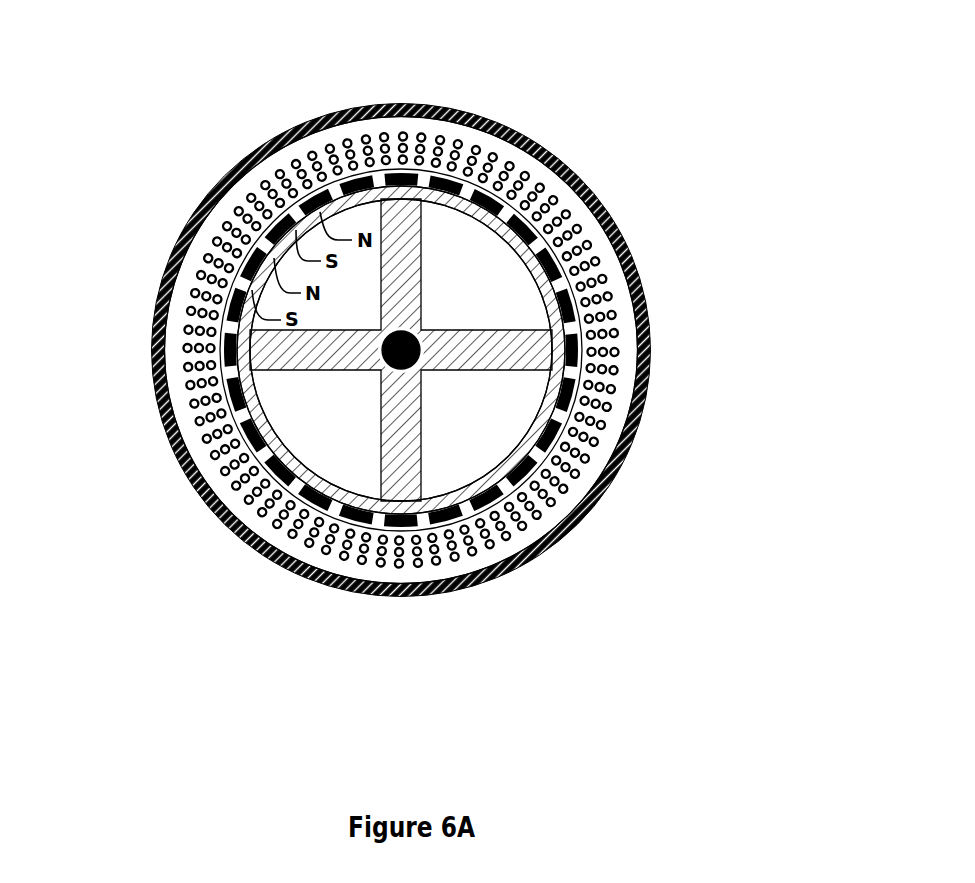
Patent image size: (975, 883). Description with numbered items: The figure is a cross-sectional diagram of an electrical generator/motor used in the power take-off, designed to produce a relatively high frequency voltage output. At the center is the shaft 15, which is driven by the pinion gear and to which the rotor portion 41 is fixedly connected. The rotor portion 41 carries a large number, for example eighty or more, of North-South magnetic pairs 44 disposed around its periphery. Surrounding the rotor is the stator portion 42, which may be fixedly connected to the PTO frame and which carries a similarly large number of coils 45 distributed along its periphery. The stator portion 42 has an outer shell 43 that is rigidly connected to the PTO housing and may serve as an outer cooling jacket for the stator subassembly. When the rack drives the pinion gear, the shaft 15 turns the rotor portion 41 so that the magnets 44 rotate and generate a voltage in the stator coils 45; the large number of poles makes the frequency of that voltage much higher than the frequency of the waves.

The shaft 15 is at (405, 344).
The rotor portion 41 is at (262, 353).
The stator portion 42 is at (593, 229).
The outer shell 43 is at (523, 563).
The North-South magnetic pairs 44 is at (322, 202).
The coils 45 is at (310, 538).